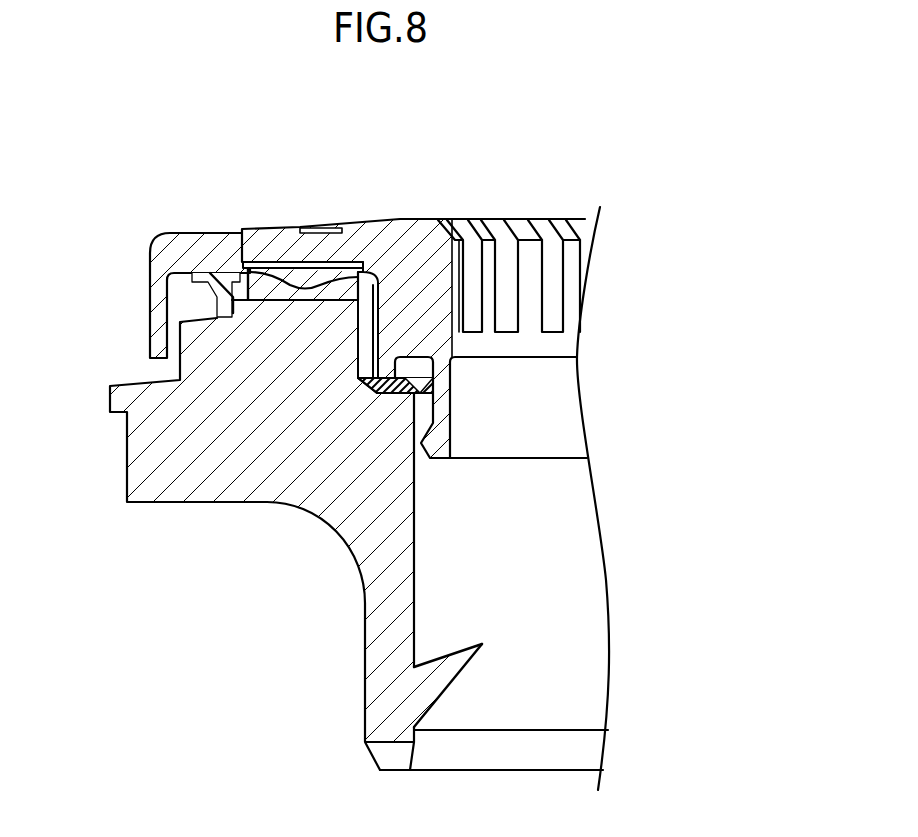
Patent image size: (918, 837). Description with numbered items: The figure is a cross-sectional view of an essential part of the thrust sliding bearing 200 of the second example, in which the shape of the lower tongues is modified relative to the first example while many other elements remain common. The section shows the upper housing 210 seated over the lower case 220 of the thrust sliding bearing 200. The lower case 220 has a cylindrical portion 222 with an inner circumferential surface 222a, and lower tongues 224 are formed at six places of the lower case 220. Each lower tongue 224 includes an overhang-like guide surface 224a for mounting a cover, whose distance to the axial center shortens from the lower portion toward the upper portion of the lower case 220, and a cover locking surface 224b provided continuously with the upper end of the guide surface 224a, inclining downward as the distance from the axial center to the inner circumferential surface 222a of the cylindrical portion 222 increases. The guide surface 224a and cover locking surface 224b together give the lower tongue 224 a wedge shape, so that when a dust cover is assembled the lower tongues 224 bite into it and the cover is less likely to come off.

The thrust sliding bearing 200 is at (227, 203).
The housing 210 is at (402, 231).
The lower case 220 is at (140, 455).
The cylindrical portion 222 is at (383, 641).
The inner circumferential surface 222a is at (416, 550).
The lower tongue 224 is at (703, 597).
The guide surface 224a is at (458, 677).
The cover locking surface 224b is at (458, 648).